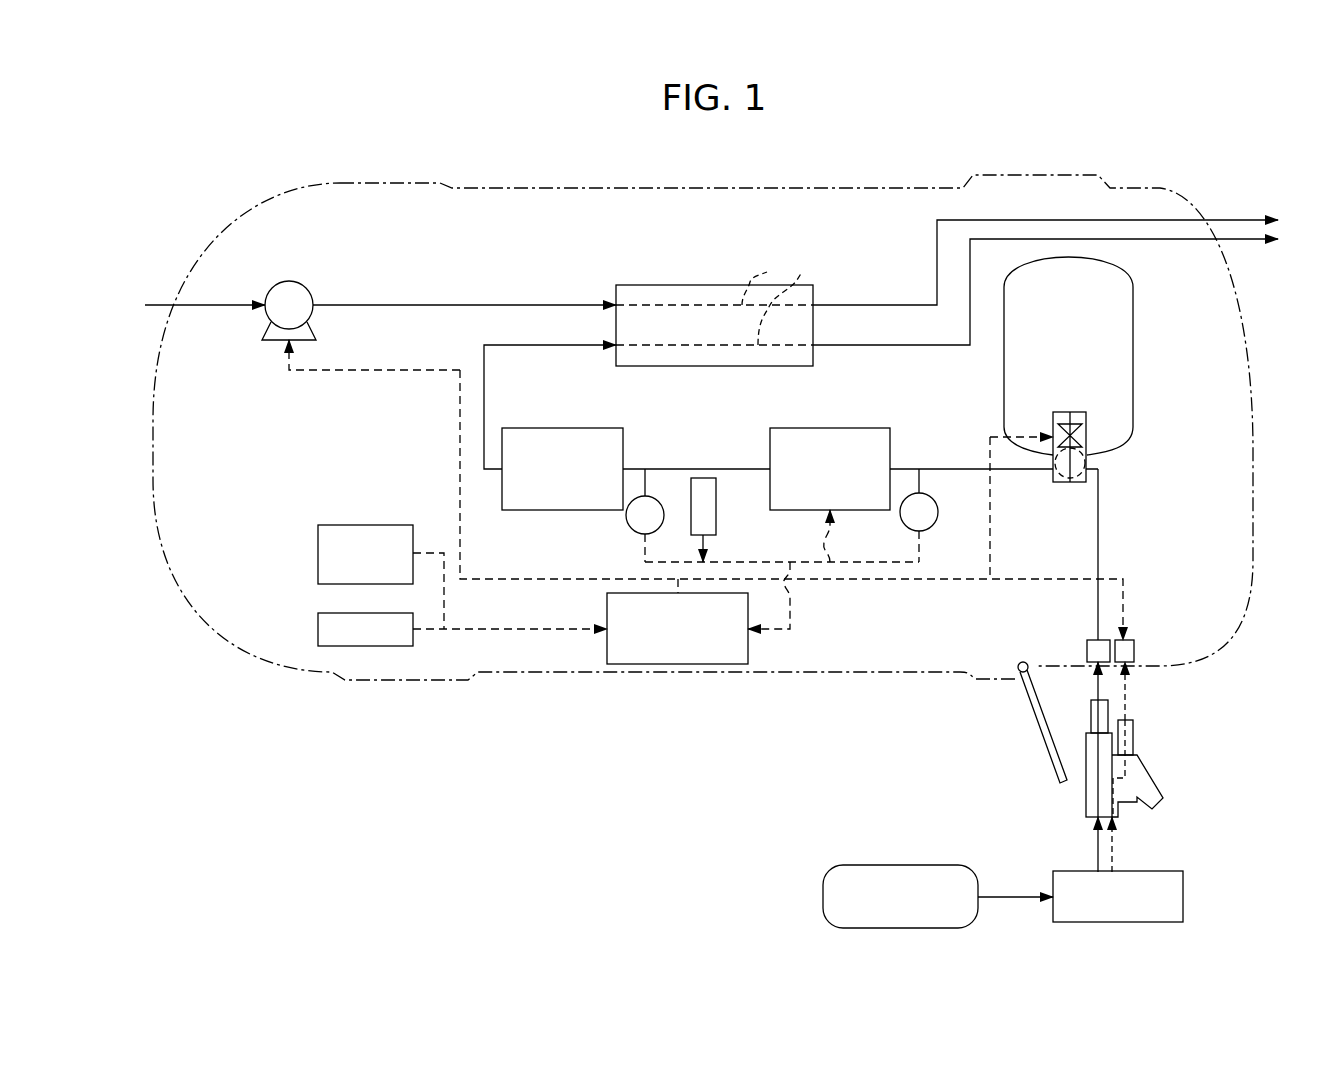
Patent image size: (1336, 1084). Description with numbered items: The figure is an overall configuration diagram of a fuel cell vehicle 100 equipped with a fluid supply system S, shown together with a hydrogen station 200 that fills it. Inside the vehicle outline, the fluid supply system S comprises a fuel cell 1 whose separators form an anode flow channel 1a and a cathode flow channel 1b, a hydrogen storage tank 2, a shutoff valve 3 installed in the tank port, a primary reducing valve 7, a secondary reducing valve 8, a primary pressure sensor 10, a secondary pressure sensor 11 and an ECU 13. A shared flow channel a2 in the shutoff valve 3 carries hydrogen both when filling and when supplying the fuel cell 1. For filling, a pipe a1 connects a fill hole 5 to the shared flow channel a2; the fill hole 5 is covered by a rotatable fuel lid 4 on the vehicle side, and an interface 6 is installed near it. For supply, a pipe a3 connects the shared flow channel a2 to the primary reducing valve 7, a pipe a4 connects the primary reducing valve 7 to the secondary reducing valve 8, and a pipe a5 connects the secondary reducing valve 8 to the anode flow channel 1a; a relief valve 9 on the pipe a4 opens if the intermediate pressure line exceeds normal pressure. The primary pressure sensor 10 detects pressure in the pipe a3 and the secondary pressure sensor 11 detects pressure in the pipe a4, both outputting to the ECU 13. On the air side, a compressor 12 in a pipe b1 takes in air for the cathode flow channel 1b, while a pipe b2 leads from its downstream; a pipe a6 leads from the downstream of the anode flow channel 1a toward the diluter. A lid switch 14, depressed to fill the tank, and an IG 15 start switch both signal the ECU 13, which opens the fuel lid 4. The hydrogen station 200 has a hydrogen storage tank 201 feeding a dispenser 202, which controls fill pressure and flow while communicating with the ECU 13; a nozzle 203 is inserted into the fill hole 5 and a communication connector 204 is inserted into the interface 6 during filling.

The fuel cell 1 is at (712, 285).
The anode flow channel 1a is at (789, 297).
The cathode flow channel 1b is at (763, 277).
The hydrogen storage tank 2 is at (1133, 366).
The shutoff valve 3 is at (1070, 483).
The fuel lid 4 is at (1050, 771).
The fill hole 5 is at (1090, 650).
The interface 6 is at (1134, 650).
The primary reducing valve 7 is at (833, 428).
The secondary reducing valve 8 is at (563, 428).
The relief valve 9 is at (716, 510).
The primary pressure sensor 10 is at (938, 512).
The secondary pressure sensor 11 is at (628, 527).
The compressor 12 is at (287, 281).
The ECU 13 is at (748, 645).
The lid switch 14 is at (366, 525).
The IG 15 is at (366, 613).
The fuel cell vehicle 100 is at (378, 690).
The hydrogen station 200 is at (935, 862).
The hydrogen storage tank 201 is at (822, 897).
The dispenser 202 is at (1183, 890).
The nozzle 203 is at (1091, 710).
The communication connector 204 is at (1133, 738).
The fluid supply system S is at (578, 232).
The pipe a1 is at (1099, 545).
The shared flow channel a2 is at (1087, 455).
The pipe a3 is at (905, 469).
The pipe a4 is at (673, 469).
The pipe a5 is at (550, 345).
The pipe a6 is at (858, 345).
The pipe b1 is at (393, 305).
The pipe b2 is at (858, 305).